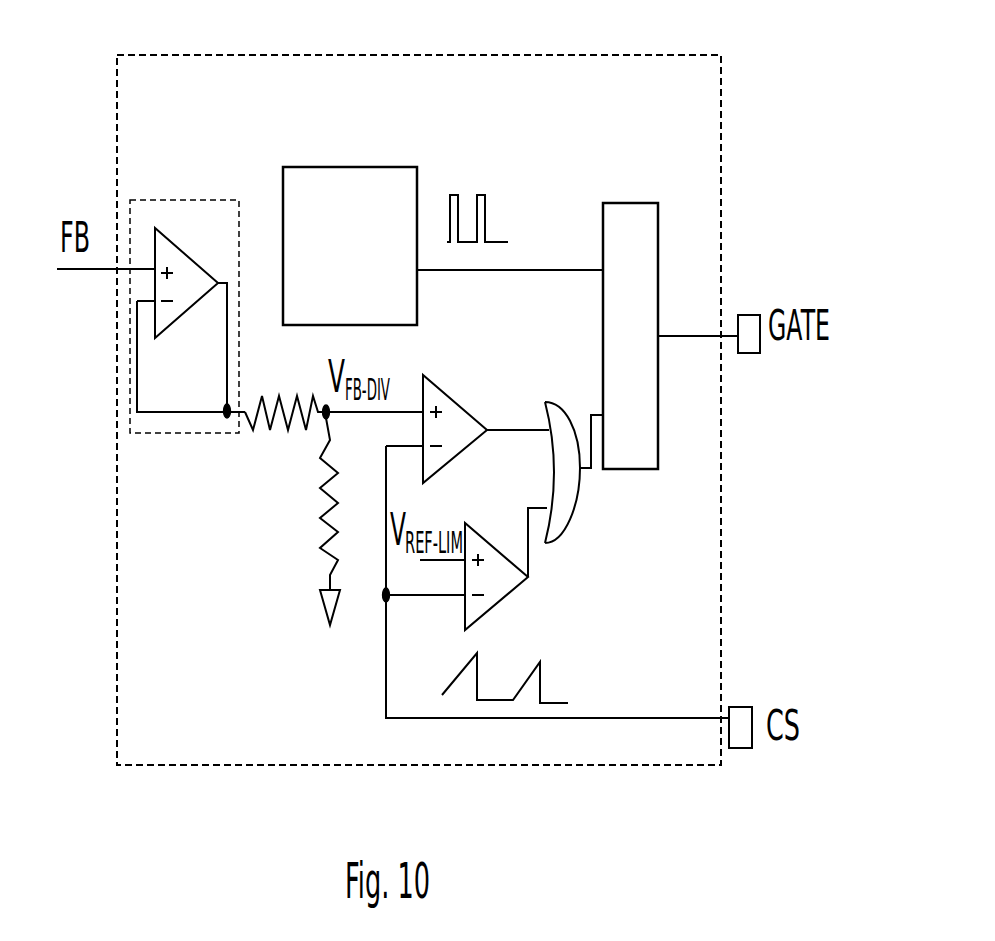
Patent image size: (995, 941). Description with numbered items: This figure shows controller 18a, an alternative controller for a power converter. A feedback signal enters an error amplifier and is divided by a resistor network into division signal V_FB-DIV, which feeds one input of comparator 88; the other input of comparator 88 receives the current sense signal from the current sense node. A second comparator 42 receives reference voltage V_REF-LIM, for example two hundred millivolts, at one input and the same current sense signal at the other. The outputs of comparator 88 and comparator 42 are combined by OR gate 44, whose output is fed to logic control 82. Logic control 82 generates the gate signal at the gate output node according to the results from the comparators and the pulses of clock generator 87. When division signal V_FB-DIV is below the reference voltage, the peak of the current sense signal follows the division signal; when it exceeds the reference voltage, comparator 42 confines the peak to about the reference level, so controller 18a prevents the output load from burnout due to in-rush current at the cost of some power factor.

The controller 18a is at (722, 177).
The clock generator 87 is at (364, 267).
The logic control 82 is at (643, 358).
The comparator 88 is at (443, 390).
The OR gate 44 is at (552, 400).
The comparator 42 is at (465, 525).